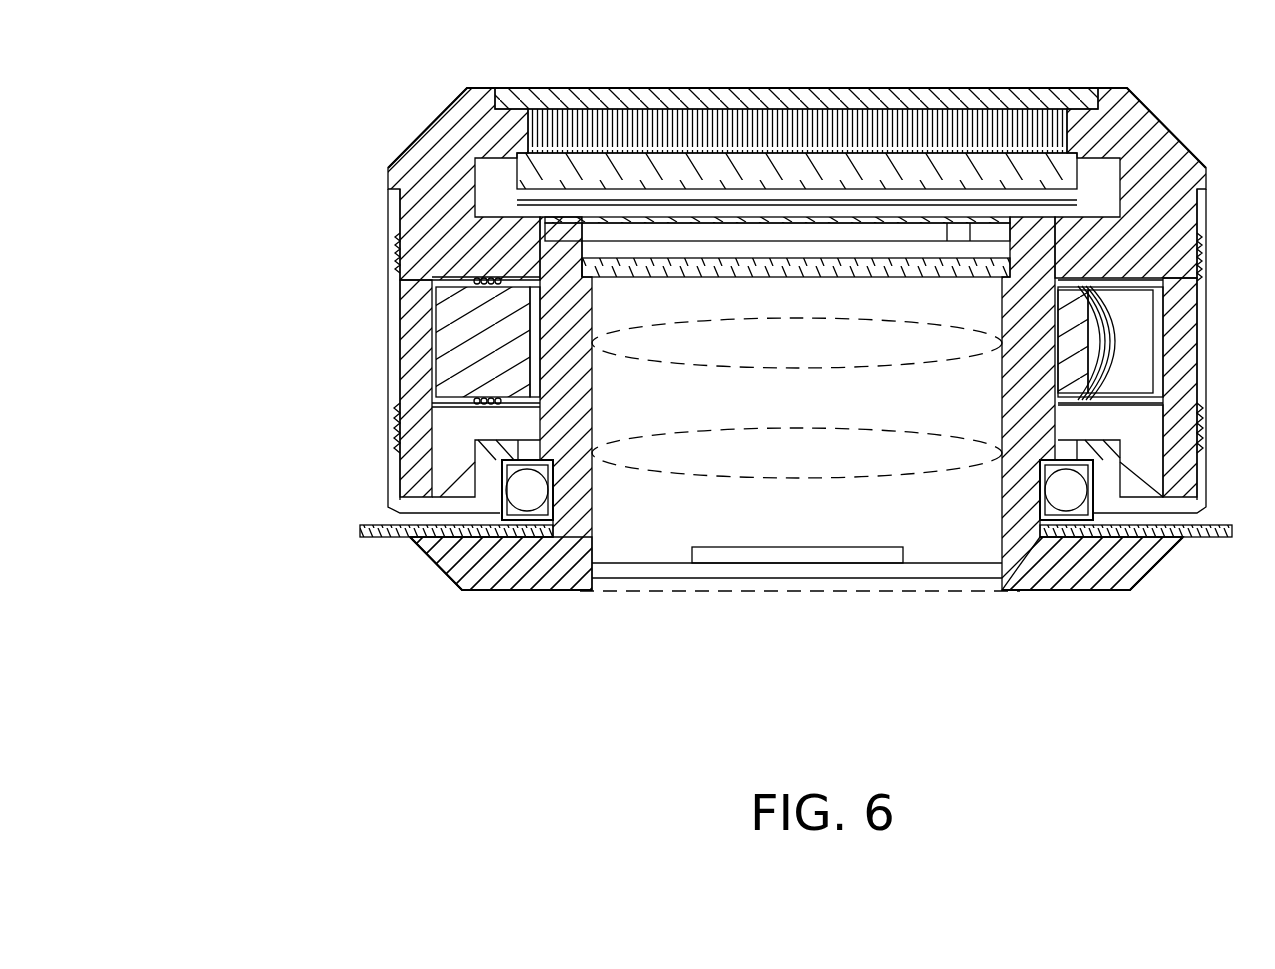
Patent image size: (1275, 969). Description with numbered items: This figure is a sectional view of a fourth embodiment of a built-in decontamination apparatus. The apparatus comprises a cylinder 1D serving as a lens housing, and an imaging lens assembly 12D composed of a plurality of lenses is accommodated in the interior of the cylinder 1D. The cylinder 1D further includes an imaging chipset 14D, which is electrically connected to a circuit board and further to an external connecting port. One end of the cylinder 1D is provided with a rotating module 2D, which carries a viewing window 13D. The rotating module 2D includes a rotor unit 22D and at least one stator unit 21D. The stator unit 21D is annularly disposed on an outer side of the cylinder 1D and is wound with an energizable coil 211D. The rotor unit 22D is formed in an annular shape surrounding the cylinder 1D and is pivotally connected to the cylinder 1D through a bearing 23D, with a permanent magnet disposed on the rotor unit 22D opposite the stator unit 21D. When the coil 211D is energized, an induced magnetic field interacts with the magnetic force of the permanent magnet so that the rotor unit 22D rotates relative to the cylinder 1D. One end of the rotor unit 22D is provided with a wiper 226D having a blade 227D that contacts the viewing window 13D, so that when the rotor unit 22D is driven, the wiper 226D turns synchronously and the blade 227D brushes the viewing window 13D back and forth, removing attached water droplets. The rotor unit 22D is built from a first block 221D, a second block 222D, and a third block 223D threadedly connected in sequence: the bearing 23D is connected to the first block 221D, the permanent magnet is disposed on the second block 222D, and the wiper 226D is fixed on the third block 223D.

The cylinder 1D is at (1045, 243).
The rotating module 2D is at (641, 360).
The imaging lens assembly 12D is at (912, 472).
The viewing window 13D is at (633, 172).
The imaging chipset 14D is at (907, 555).
The stator unit 21D is at (453, 377).
The rotor unit 22D is at (679, 317).
The bearing 23D is at (532, 497).
The coil 211D is at (785, 225).
The first block 221D is at (392, 466).
The second block 222D is at (400, 358).
The third block 223D is at (388, 178).
The wiper 226D is at (800, 100).
The blade 227D is at (940, 130).